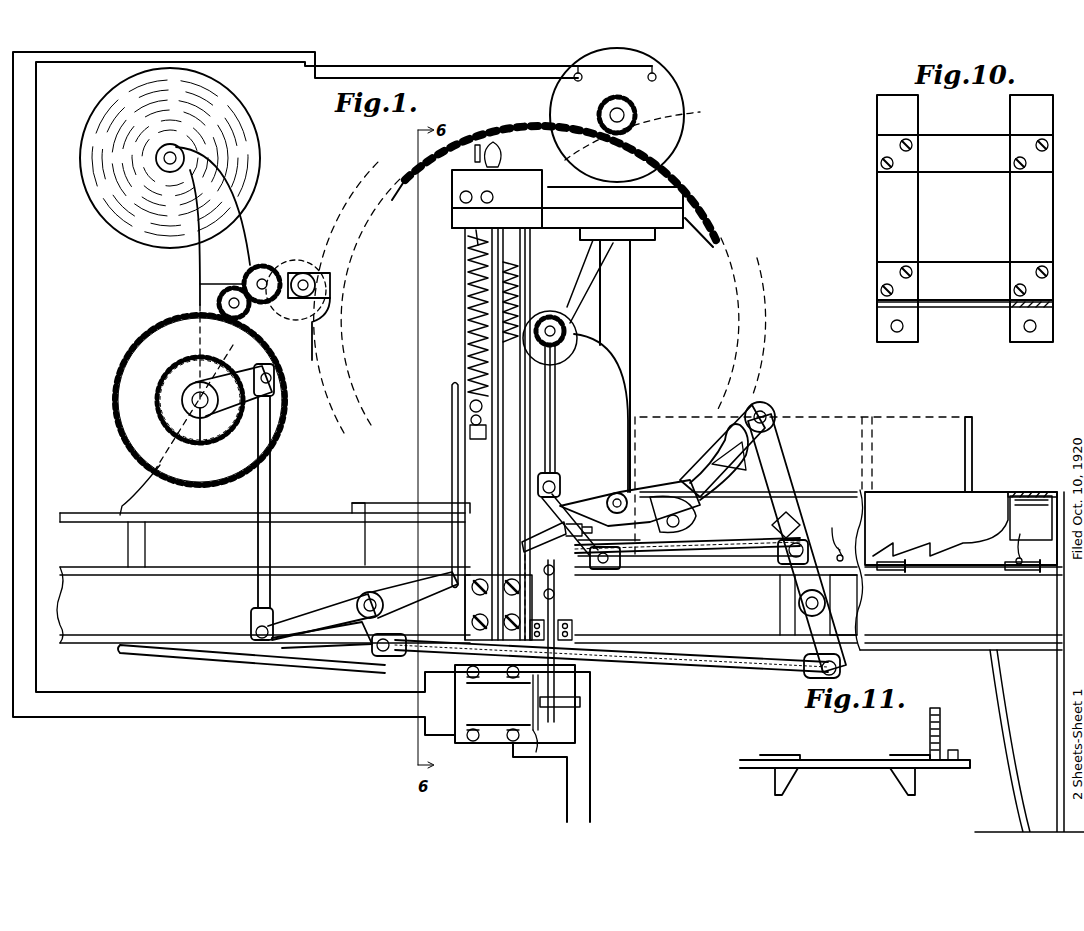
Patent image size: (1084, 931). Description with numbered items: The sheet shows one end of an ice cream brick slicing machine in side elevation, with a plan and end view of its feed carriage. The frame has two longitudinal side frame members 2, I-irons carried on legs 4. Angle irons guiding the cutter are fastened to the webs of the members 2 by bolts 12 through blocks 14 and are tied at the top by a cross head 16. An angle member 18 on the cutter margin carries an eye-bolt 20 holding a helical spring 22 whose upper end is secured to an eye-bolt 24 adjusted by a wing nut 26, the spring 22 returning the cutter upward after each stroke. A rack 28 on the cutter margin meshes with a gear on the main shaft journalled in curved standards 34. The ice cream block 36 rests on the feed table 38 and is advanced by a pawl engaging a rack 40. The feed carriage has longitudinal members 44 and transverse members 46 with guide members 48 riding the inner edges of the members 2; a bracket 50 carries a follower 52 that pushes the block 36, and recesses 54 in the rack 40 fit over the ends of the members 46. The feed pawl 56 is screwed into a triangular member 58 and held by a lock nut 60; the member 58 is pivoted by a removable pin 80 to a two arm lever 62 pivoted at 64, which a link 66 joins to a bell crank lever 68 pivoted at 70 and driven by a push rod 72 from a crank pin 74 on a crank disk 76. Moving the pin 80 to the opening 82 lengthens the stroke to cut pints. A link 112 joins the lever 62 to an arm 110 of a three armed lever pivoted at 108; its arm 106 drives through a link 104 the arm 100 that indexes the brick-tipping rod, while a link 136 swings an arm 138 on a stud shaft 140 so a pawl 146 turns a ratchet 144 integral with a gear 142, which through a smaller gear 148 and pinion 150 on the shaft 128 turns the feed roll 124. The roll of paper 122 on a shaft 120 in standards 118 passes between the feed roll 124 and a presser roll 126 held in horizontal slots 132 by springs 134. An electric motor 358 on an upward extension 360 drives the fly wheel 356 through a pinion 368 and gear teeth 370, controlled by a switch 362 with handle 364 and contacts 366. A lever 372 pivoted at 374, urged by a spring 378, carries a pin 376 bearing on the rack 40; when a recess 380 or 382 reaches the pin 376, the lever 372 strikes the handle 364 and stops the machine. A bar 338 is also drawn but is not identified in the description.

In FIG. 1, the side frame member 2 is at (78, 624).
In FIG. 1, the leg 4 is at (1022, 800).
In FIG. 1, the bolt 12 is at (476, 590).
In FIG. 1, the block 14 is at (410, 642).
In FIG. 1, the cross head 16 is at (513, 210).
In FIG. 1, the angle member 18 is at (470, 428).
In FIG. 1, the eye-bolt 20 is at (470, 410).
In FIG. 1, the helical spring 22 is at (468, 326).
In FIG. 1, the eye-bolt 24 is at (470, 242).
In FIG. 1, the wing nut 26 is at (460, 204).
In FIG. 1, the rack 28 is at (516, 250).
In FIG. 1, the curved standard 34 is at (618, 408).
In FIG. 1, the ice cream block 36 is at (928, 422).
In FIG. 1, the feed table 38 is at (970, 506).
In FIG. 1, the rack 40 is at (934, 546).
In FIG. 10, the longitudinal member 44 is at (947, 138).
In FIG. 11, the longitudinal member 44 is at (784, 757).
In FIG. 1, the transverse member 46 is at (890, 570).
In FIG. 10, the transverse member 46 is at (912, 216).
In FIG. 11, the transverse member 46 is at (851, 770).
In FIG. 11, the guide member 48 is at (779, 794).
In FIG. 1, the bracket 50 is at (1028, 506).
In FIG. 10, the bracket 50 is at (1012, 310).
In FIG. 11, the bracket 50 is at (941, 718).
In FIG. 1, the follower 52 is at (973, 428).
In FIG. 1, the recess 54 is at (906, 572).
In FIG. 1, the feed pawl 56 is at (538, 528).
In FIG. 1, the triangular member 58 is at (718, 562).
In FIG. 1, the lock nut 60 is at (590, 534).
In FIG. 1, the two arm lever 62 is at (784, 468).
In FIG. 1, the pivot 64 is at (800, 605).
In FIG. 1, the link 66 is at (746, 560).
In FIG. 1, the bell crank lever 68 is at (606, 490).
In FIG. 1, the pivot 70 is at (622, 500).
In FIG. 1, the push rod 72 is at (554, 414).
In FIG. 1, the crank pin 74 is at (564, 362).
In FIG. 1, the crank disk 76 is at (572, 325).
In FIG. 1, the pivot pin 80 is at (792, 516).
In FIG. 1, the opening 82 is at (776, 410).
In FIG. 1, the arm 100 is at (462, 386).
In FIG. 1, the link 104 is at (436, 524).
In FIG. 1, the arm 106 is at (396, 590).
In FIG. 1, the pivot 108 is at (356, 600).
In FIG. 1, the arm 110 is at (376, 641).
In FIG. 1, the link 112 is at (755, 668).
In FIG. 1, the standard 118 is at (206, 266).
In FIG. 1, the shaft 120 is at (178, 158).
In FIG. 1, the roll of paper 122 is at (233, 112).
In FIG. 1, the feed roll 124 is at (263, 266).
In FIG. 1, the presser roll 126 is at (306, 275).
In FIG. 1, the shaft 128 is at (264, 300).
In FIG. 1, the horizontal slot 132 is at (290, 276).
In FIG. 1, the spring 134 is at (331, 282).
In FIG. 1, the link 136 is at (266, 543).
In FIG. 1, the arm 138 is at (216, 384).
In FIG. 1, the stud shaft 140 is at (200, 442).
In FIG. 1, the gear 142 is at (124, 436).
In FIG. 1, the ratchet 144 is at (170, 392).
In FIG. 1, the pawl 146 is at (236, 376).
In FIG. 1, the gear 148 is at (216, 306).
In FIG. 1, the pinion 150 is at (200, 286).
In FIG. 1, the bar 338 is at (192, 668).
In FIG. 1, the fly wheel 356 is at (746, 262).
In FIG. 1, the electric motor 358 is at (682, 90).
In FIG. 1, the upward extension 360 is at (624, 296).
In FIG. 1, the switch 362 is at (540, 757).
In FIG. 1, the handle 364 is at (582, 703).
In FIG. 1, the contact 366 is at (510, 722).
In FIG. 1, the pinion 368 is at (640, 112).
In FIG. 1, the gear teeth 370 is at (690, 178).
In FIG. 1, the lever 372 is at (574, 626).
In FIG. 1, the pivot 374 is at (574, 640).
In FIG. 1, the pin 376 is at (556, 572).
In FIG. 1, the spring 378 is at (556, 594).
In FIG. 1, the recess 380 is at (832, 548).
In FIG. 1, the recess 382 is at (1024, 538).